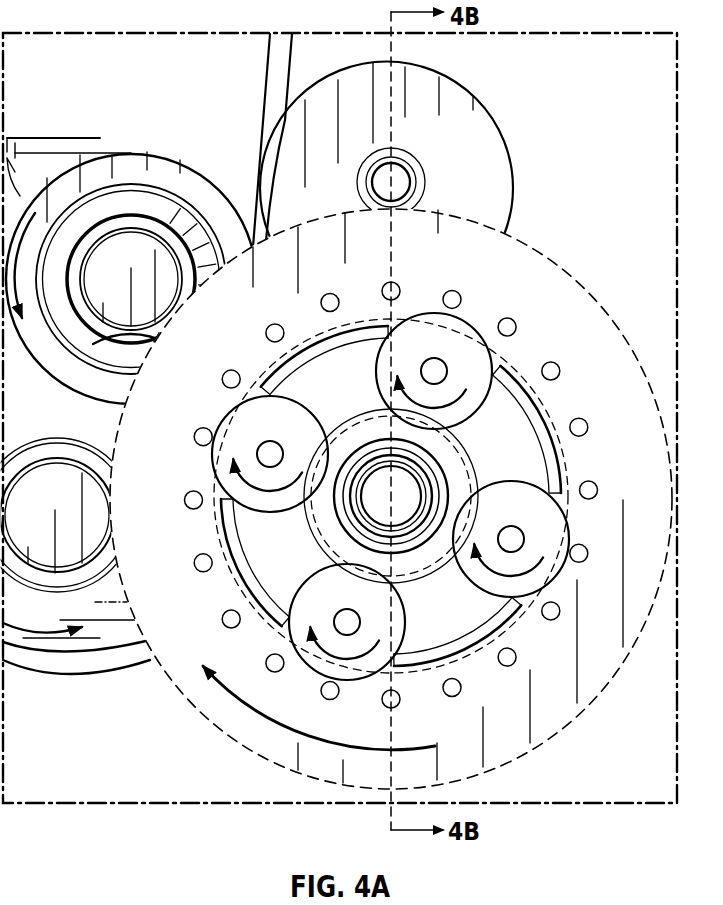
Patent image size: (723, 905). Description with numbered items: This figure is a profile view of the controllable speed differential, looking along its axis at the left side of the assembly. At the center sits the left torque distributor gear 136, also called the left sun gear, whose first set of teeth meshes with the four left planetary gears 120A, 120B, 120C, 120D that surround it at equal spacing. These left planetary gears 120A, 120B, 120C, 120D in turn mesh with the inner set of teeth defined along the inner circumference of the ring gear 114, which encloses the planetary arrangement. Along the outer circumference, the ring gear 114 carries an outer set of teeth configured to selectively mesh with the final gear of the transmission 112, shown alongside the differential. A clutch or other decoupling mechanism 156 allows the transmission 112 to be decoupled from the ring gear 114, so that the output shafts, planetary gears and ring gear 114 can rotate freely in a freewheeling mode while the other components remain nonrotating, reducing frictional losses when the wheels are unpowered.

The decoupling mechanism 156 is at (108, 167).
The transmission 112 is at (157, 167).
The ring gear 114 is at (543, 297).
The left planetary gear 120A is at (470, 350).
The left planetary gear 120B is at (535, 558).
The left planetary gear 120C is at (325, 648).
The left planetary gear 120D is at (260, 404).
The left torque distributor gear 136 is at (430, 550).